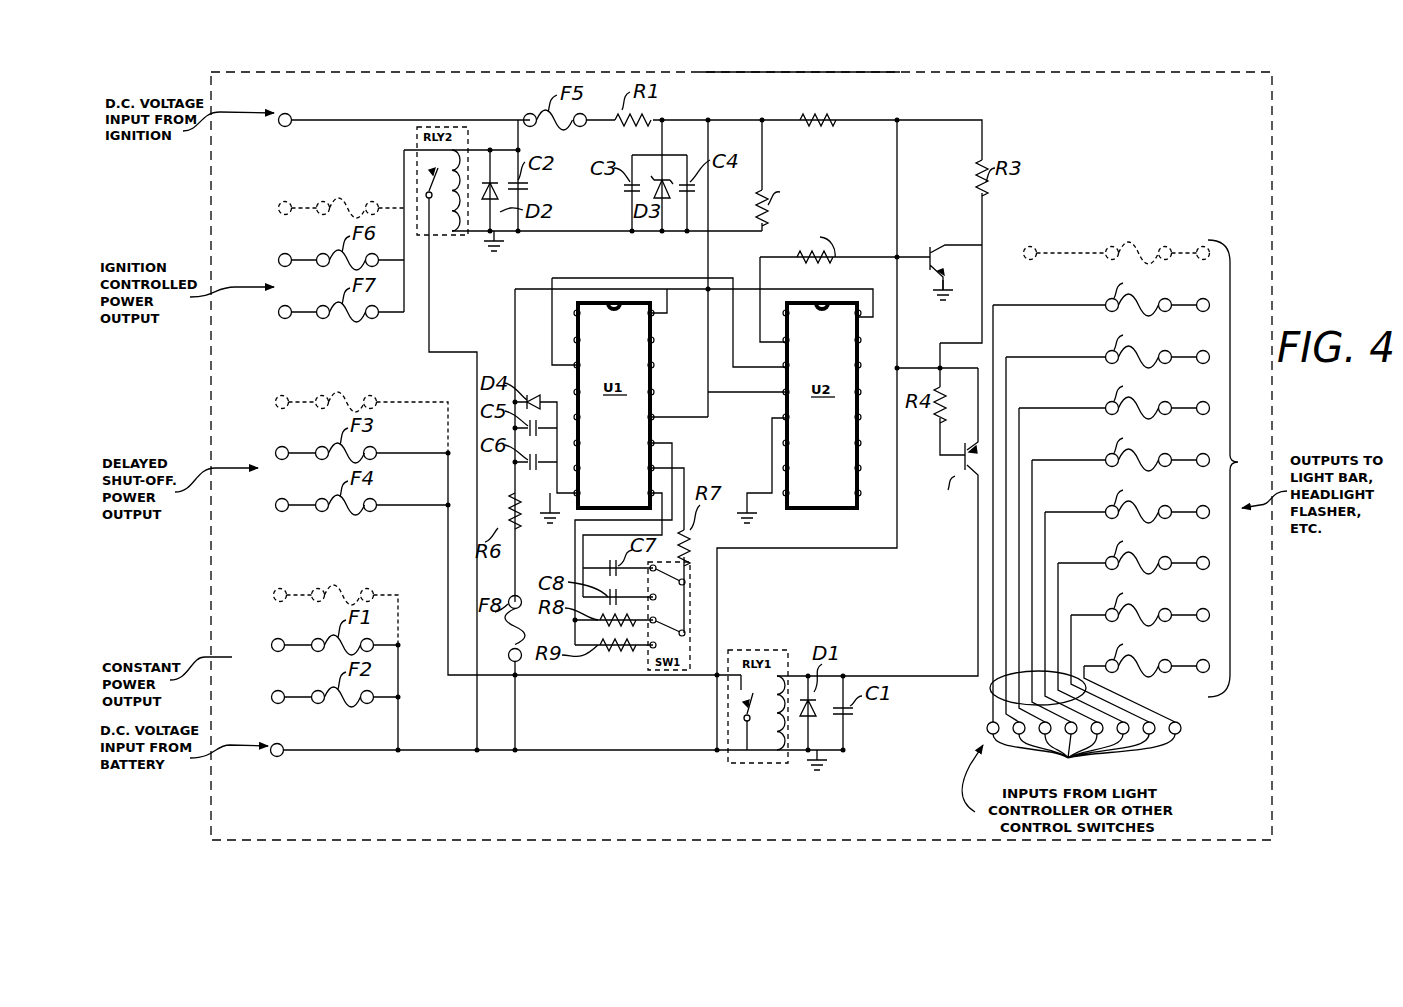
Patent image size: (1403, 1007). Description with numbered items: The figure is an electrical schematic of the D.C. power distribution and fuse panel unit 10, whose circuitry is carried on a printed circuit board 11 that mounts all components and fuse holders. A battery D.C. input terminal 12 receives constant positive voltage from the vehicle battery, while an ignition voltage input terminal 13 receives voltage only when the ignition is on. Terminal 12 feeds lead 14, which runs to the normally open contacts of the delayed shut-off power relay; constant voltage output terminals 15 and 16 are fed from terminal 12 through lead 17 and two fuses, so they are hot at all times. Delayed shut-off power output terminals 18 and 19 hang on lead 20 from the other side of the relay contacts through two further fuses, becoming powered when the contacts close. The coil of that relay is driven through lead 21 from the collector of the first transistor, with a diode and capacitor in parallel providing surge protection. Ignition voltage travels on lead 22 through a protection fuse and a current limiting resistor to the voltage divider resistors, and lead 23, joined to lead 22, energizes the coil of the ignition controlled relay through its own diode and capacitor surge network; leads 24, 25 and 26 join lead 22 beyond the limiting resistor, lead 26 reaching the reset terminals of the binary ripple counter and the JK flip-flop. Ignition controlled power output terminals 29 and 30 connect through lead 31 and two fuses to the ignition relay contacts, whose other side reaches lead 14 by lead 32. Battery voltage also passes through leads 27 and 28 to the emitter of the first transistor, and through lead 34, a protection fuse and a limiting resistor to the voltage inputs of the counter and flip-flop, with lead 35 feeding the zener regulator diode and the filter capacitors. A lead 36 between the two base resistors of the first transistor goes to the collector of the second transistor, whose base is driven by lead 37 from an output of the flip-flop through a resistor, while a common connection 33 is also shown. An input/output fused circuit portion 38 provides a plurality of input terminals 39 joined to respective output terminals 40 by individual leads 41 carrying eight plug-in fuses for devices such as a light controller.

The D.C. power distribution and fuse panel unit 10 is at (995, 70).
The printed circuit board 11 is at (808, 72).
The battery D.C. input terminal 12 is at (280, 756).
The ignition voltage input terminal 13 is at (290, 113).
The lead 14 is at (568, 752).
The constant voltage output terminal 15 is at (280, 638).
The constant voltage output terminal 16 is at (280, 690).
The lead 17 is at (398, 720).
The delayed shut-off power voltage output terminal 18 is at (282, 446).
The delayed shut-off power voltage output terminal 19 is at (282, 498).
The lead 20 is at (448, 553).
The lead 21 is at (978, 634).
The lead 22 is at (370, 120).
The lead 23 is at (518, 144).
The lead 24 is at (592, 231).
The lead 25 is at (662, 140).
The lead 26 is at (722, 100).
The lead 27 is at (897, 180).
The lead 28 is at (905, 362).
The ignition controlled power output terminal 29 is at (328, 255).
The ignition controlled power output terminal 30 is at (328, 307).
The lead 31 is at (404, 166).
The lead 32 is at (429, 338).
The timer supply bus 33 is at (600, 278).
The lead 34 is at (515, 290).
The lead 35 is at (552, 402).
The lead 36 is at (962, 245).
The lead 37 is at (862, 257).
The input/output fused circuit portion 38 is at (1125, 218).
The input terminals 39 is at (1084, 546).
The output terminals 40 is at (1132, 468).
The leads 41 is at (990, 692).